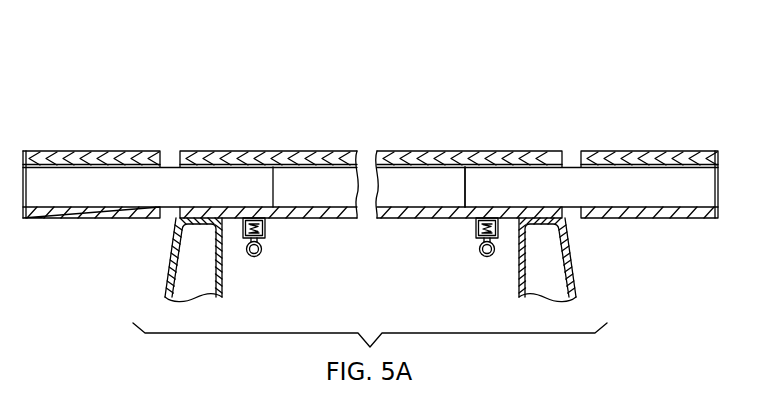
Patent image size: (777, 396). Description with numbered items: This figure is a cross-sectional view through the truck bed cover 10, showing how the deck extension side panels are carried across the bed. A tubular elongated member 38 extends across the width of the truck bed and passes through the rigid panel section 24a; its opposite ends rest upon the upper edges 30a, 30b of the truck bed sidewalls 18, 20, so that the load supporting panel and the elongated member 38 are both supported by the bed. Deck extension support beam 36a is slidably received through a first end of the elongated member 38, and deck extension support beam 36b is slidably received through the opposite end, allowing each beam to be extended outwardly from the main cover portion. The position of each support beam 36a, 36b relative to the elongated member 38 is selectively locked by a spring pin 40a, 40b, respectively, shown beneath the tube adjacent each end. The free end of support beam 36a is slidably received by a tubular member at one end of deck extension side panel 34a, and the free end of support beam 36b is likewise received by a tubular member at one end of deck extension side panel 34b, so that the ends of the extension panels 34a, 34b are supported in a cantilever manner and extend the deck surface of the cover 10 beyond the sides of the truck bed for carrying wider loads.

The cover 10 is at (492, 74).
The sidewall 18 is at (170, 276).
The sidewall 20 is at (574, 278).
The panel section 24a is at (437, 160).
The upper edge 30a is at (207, 218).
The upper edge 30b is at (530, 220).
The deck extension side panel 34a is at (700, 218).
The deck extension side panel 34b is at (75, 218).
The deck extension support beam 36a is at (643, 183).
The deck extension support beam 36b is at (140, 187).
The elongated member 38 is at (391, 219).
The spring pin 40a is at (266, 234).
The spring pin 40b is at (477, 237).